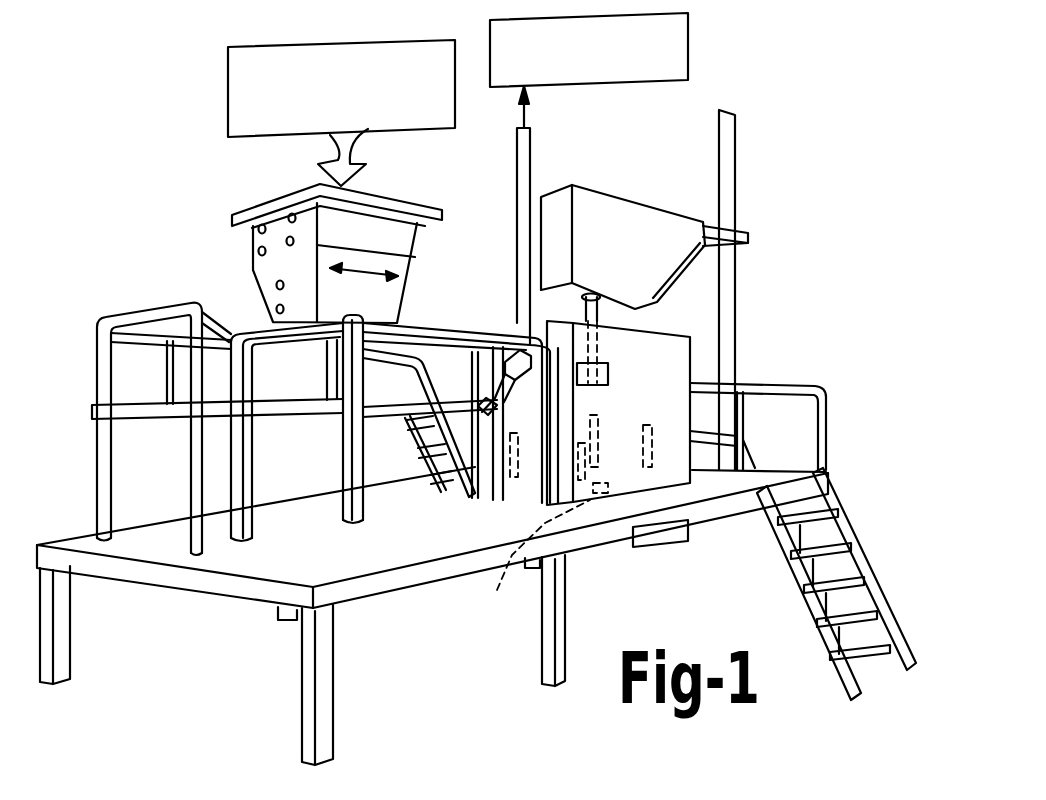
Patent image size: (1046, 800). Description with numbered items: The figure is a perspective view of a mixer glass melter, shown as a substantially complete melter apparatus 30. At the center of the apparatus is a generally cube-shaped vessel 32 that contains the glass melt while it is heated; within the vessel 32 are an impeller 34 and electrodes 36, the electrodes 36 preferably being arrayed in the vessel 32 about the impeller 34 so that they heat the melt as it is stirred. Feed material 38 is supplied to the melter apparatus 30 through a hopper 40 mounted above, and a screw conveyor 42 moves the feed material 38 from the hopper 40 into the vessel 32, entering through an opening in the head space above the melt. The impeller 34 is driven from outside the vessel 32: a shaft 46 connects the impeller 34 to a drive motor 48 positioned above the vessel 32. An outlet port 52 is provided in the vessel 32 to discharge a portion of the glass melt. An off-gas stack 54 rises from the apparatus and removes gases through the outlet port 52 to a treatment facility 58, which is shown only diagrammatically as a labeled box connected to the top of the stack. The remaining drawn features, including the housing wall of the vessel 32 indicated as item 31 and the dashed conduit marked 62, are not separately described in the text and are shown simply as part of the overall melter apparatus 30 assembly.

The melter apparatus 30 is at (806, 170).
The housing 31 is at (678, 347).
The vessel 32 is at (624, 478).
The impeller 34 is at (610, 372).
The electrodes 36 is at (602, 448).
The feed material 38 is at (248, 137).
The hopper 40 is at (390, 300).
The screw conveyor 42 is at (467, 320).
The shaft 46 is at (595, 313).
The drive motor 48 is at (600, 200).
The outlet port 52 is at (512, 378).
The off-gas stack 54 is at (514, 173).
The treatment facility 58 is at (688, 31).
The conduit 62 is at (531, 563).